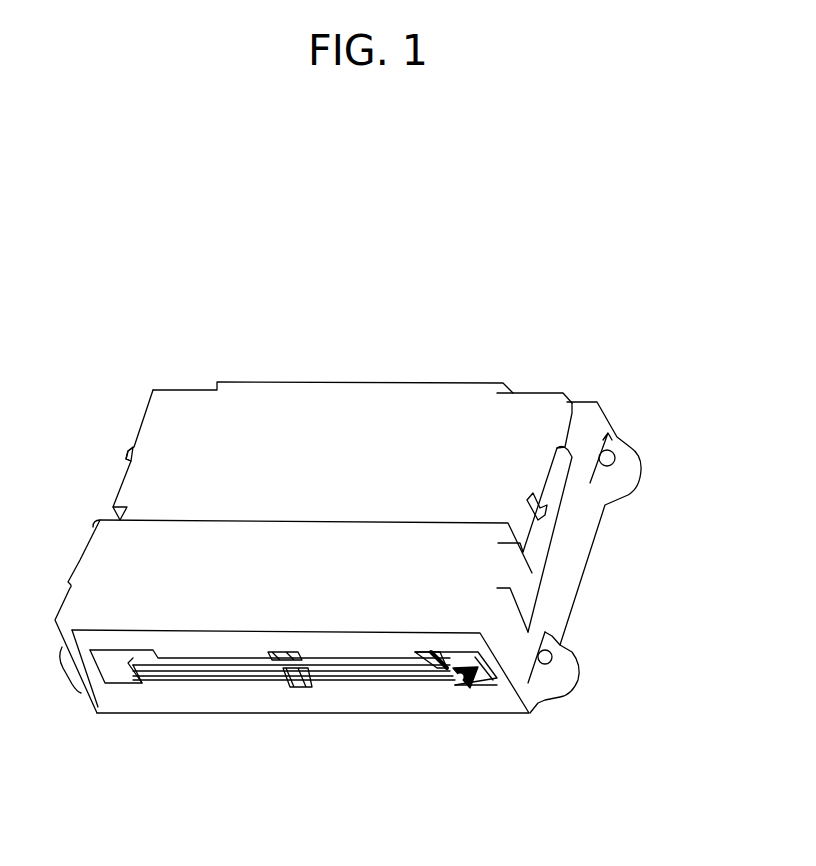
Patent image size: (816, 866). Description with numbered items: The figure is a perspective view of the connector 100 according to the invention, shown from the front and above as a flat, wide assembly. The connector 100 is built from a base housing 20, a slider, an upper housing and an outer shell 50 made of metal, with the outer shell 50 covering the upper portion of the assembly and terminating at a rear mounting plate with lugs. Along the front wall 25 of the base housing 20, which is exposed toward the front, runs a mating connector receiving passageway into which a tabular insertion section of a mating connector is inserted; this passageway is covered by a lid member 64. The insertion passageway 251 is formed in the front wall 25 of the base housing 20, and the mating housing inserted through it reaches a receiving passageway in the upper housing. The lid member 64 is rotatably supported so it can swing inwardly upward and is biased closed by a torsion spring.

The connector 100 is at (614, 271).
The outer shell 50 is at (548, 407).
The lid member 64 is at (447, 658).
The insertion passageway 251 is at (466, 690).
The base housing 20 is at (569, 610).
The front wall 25 is at (510, 703).